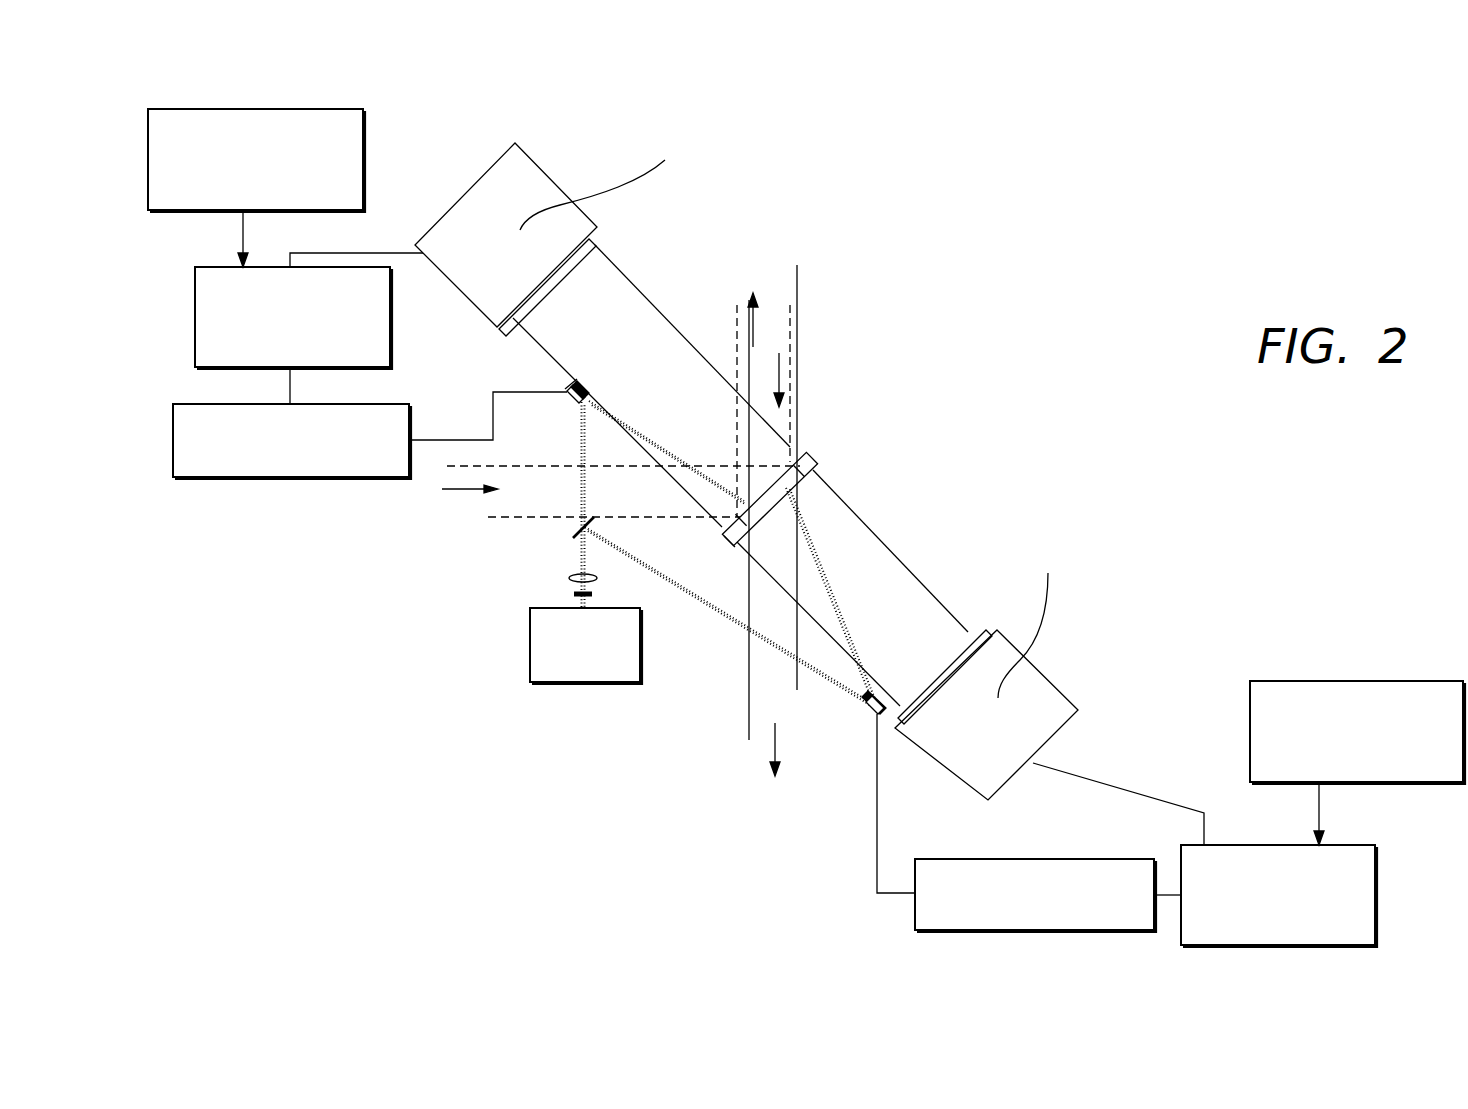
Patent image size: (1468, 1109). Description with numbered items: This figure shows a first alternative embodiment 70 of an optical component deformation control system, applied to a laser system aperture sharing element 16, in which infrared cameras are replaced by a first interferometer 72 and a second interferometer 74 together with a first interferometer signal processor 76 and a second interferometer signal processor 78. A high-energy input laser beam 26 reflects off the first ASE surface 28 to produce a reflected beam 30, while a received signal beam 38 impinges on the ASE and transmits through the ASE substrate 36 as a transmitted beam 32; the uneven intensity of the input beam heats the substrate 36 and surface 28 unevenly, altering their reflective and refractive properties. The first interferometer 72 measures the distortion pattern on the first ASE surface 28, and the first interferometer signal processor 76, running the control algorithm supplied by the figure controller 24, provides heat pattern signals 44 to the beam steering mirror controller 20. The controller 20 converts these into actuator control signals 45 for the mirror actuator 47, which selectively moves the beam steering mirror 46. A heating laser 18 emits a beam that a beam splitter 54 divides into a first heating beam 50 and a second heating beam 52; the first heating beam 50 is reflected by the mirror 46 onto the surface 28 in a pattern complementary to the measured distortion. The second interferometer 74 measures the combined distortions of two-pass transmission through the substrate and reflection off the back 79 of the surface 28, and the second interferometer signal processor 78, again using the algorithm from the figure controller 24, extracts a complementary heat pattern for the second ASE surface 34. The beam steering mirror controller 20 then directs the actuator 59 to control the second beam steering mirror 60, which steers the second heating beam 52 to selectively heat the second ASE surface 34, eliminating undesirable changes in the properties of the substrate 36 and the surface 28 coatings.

The aperture sharing element (ASE) 16 is at (830, 411).
The heating laser 18 is at (530, 665).
The first beam steering mirror controller 20 is at (290, 477).
The figure controller 24 is at (363, 122).
The high-energy input laser beam 26 is at (463, 491).
The first ASE surface 28 is at (727, 527).
The reflected beam 30 is at (745, 325).
The transmitted beam 32 is at (775, 740).
The second ASE surface 34 is at (738, 547).
The ASE substrate 36 is at (805, 456).
The received signal beam 38 is at (790, 352).
The heat pattern signals 44 is at (290, 393).
The actuator control signals 45 is at (434, 440).
The beam steering mirror 46 is at (574, 403).
The mirror actuator 47 is at (570, 385).
The first heating beam 50 is at (588, 473).
The second heating beam 52 is at (680, 600).
The beam splitter 54 is at (573, 538).
The actuator 59 is at (877, 748).
The second beam steering mirror 60 is at (866, 711).
The first alternative embodiment 70 is at (974, 284).
The first interferometer 72 is at (525, 150).
The second interferometer 74 is at (1073, 703).
The first interferometer signal processor 76 is at (195, 284).
The second interferometer signal processor 78 is at (1375, 898).
The back of the surface 79 is at (724, 543).